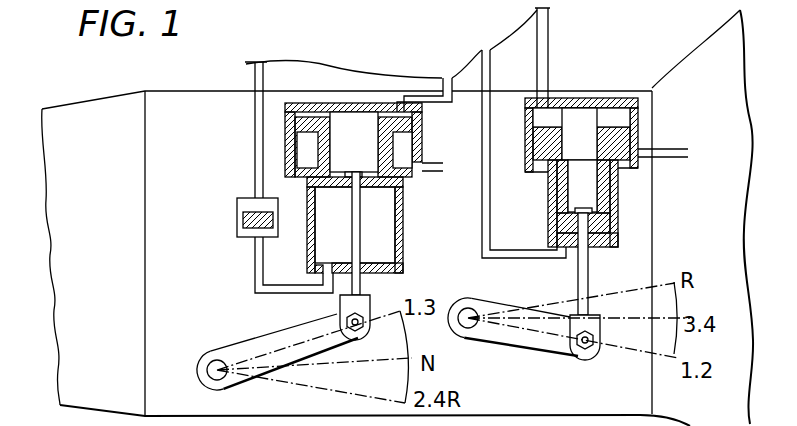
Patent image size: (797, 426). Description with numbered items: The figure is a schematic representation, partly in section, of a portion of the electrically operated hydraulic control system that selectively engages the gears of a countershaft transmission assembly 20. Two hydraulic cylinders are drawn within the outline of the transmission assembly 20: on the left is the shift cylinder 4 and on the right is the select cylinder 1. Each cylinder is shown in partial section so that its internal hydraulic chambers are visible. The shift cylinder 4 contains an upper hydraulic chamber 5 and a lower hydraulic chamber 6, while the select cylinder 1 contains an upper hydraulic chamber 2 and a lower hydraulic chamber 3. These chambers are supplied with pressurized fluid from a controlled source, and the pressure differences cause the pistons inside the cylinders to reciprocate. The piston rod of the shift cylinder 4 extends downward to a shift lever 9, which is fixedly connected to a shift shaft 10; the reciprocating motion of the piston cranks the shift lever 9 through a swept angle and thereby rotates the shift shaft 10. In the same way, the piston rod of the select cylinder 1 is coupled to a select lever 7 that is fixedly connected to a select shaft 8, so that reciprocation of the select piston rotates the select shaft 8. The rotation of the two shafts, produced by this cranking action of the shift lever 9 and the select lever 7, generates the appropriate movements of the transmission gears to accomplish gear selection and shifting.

The countershaft transmission assembly 20 is at (162, 88).
The hydraulic chamber 5 is at (355, 135).
The shift cylinder 4 is at (405, 198).
The hydraulic chamber 6 is at (380, 238).
The shift lever 9 is at (252, 345).
The shift shaft 10 is at (212, 360).
The hydraulic chamber 2 is at (582, 118).
The select cylinder 1 is at (540, 172).
The hydraulic chamber 3 is at (590, 245).
The select lever 7 is at (535, 346).
The select shaft 8 is at (468, 330).